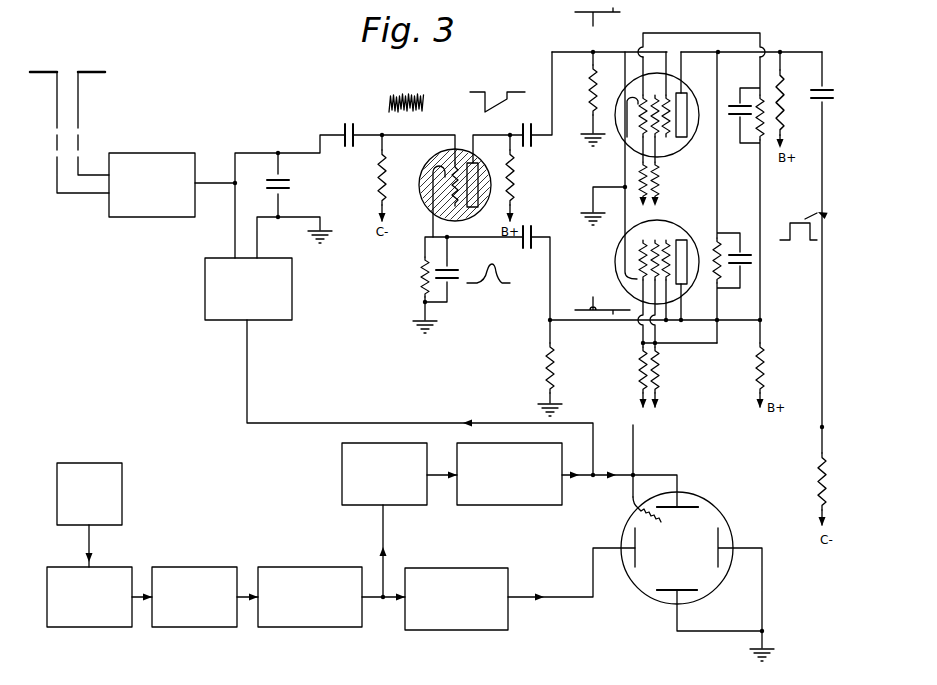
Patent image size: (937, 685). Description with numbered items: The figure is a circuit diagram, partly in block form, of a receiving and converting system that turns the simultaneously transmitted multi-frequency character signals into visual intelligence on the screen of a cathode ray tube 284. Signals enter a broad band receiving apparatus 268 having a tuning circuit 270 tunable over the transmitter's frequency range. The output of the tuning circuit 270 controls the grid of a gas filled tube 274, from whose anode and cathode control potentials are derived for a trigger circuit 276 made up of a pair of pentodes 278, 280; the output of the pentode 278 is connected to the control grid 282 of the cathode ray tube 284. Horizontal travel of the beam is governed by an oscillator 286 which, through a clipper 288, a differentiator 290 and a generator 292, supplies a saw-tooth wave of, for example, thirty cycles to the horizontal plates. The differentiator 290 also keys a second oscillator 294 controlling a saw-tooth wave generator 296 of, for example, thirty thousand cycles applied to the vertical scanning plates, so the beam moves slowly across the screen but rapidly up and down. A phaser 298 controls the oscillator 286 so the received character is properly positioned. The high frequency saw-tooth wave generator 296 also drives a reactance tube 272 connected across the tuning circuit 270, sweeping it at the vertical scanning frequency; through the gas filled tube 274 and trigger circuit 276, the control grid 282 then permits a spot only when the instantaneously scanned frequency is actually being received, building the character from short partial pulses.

The broad band receiving apparatus 268 is at (142, 151).
The tuning circuit 270 is at (309, 178).
The reactance tube 272 is at (212, 268).
The gas filled tube 274 is at (432, 166).
The trigger circuit 276 is at (701, 194).
The pentode 278 is at (631, 85).
The pentode 280 is at (615, 270).
The control grid 282 is at (632, 521).
The cathode ray tube 284 is at (728, 502).
The oscillator 286 is at (105, 572).
The clipper 288 is at (183, 577).
The differentiator 290 is at (285, 572).
The generator 292 is at (455, 576).
The second oscillator 294 is at (342, 452).
The saw-tooth wave generator 296 is at (555, 491).
The phaser 298 is at (122, 474).